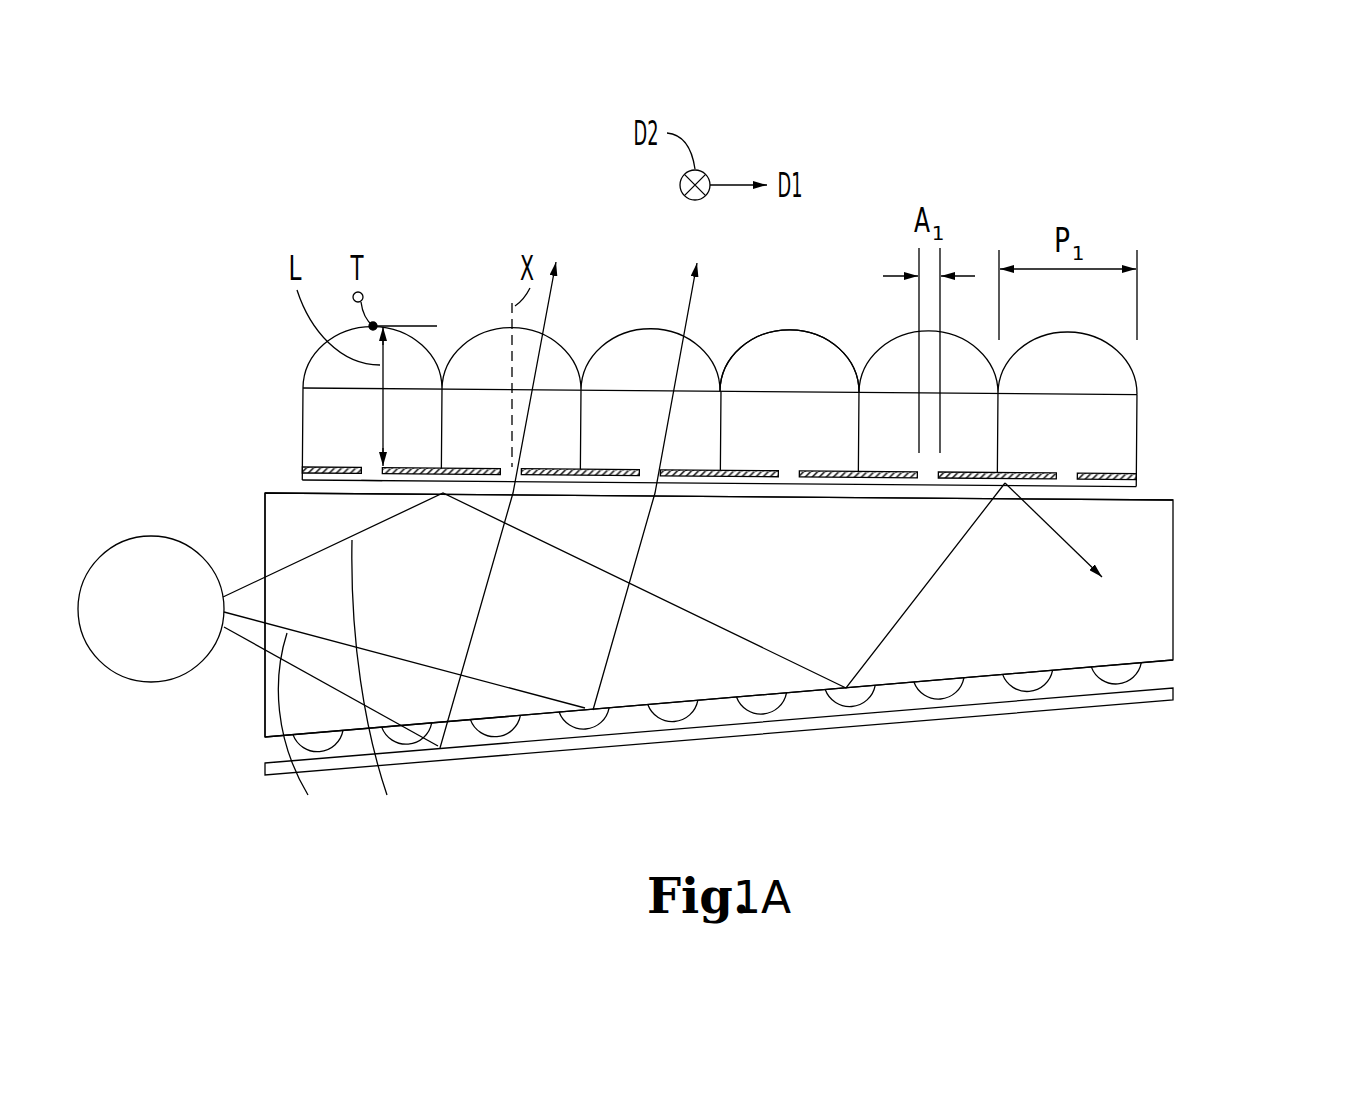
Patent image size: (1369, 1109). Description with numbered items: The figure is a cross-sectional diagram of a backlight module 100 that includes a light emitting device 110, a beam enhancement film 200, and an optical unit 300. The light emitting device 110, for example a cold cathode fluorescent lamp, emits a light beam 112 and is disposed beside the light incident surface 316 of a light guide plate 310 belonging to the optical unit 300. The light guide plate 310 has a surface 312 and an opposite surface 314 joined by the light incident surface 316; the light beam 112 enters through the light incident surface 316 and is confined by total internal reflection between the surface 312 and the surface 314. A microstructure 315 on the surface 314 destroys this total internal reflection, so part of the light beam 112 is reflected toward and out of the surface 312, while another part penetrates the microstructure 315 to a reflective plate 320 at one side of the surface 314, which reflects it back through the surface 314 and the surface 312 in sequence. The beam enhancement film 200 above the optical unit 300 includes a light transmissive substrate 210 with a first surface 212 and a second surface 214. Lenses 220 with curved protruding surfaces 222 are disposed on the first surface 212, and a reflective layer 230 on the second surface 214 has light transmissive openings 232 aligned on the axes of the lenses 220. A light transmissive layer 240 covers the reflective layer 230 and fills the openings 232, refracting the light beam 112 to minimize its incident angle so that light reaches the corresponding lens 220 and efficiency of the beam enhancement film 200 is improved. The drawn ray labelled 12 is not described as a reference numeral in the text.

The backlight module 100 is at (1318, 806).
The light emitting device 110 is at (148, 663).
The light beam 12 is at (246, 638).
The light beam 112 is at (341, 687).
The beam enhancement film 200 is at (721, 382).
The light transmissive substrate 210 is at (1123, 450).
The first surface 212 is at (763, 390).
The second surface 214 is at (1118, 488).
The lens 220 is at (485, 358).
The curved protruding surface 222 is at (786, 325).
The reflective layer 230 is at (1143, 480).
The light transmissive opening 232 is at (372, 474).
The light transmissive layer 240 is at (1040, 490).
The optical unit 300 is at (721, 563).
The light guide plate 310 is at (1120, 622).
The surface 312 is at (1070, 495).
The surface 314 is at (1159, 663).
The microstructure 315 is at (673, 708).
The light incident surface 316 is at (261, 542).
The reflective plate 320 is at (1134, 697).